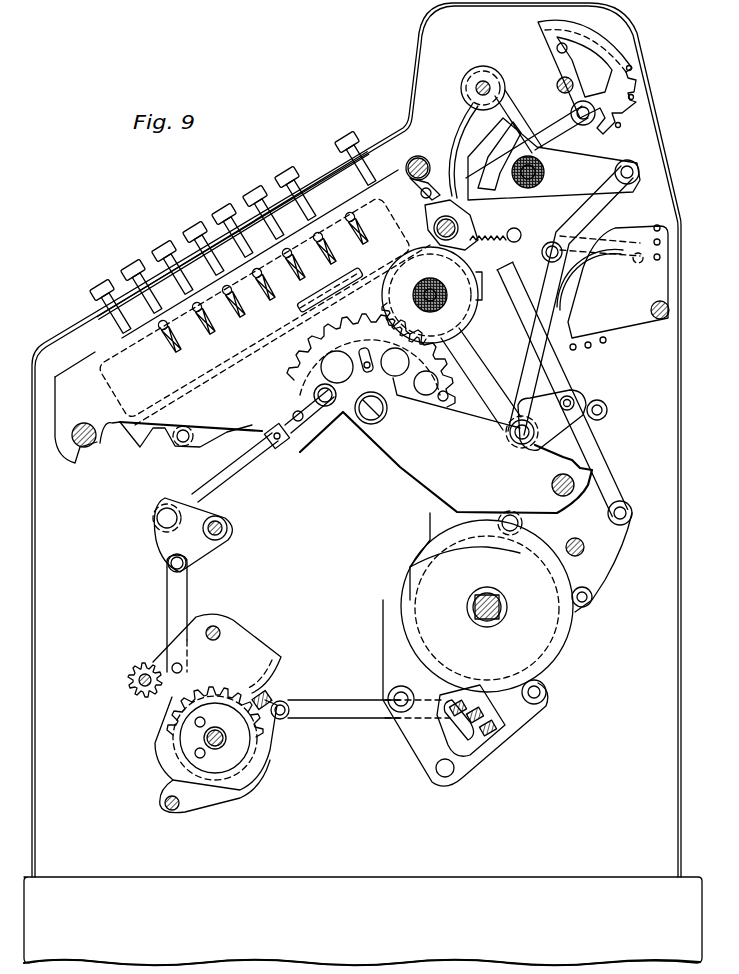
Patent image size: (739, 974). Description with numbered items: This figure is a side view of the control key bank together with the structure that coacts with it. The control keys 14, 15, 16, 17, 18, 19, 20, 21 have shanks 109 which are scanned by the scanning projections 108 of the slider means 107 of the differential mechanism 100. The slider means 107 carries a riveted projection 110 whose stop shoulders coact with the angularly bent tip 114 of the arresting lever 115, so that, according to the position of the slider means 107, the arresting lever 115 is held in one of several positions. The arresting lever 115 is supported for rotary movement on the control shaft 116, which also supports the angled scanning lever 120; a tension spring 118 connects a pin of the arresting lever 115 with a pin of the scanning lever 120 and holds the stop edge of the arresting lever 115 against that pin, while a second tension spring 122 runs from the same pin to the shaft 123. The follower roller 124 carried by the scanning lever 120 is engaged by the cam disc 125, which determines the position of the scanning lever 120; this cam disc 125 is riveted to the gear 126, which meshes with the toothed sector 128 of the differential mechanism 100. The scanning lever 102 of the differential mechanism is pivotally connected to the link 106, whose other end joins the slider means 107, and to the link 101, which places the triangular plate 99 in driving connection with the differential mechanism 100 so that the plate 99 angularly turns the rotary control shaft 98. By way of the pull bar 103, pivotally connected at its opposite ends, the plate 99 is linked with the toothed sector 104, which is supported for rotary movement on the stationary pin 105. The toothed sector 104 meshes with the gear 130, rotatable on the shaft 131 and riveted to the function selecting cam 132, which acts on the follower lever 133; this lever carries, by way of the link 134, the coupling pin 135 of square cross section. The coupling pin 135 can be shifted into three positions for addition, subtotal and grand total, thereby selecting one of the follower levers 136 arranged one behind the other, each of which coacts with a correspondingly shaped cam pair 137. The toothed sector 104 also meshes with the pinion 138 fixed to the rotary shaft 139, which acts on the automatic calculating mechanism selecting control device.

The control key 14 is at (347, 135).
The control key 15 is at (287, 170).
The control key 16 is at (255, 189).
The control key 17 is at (224, 207).
The control key 18 is at (195, 225).
The control key 19 is at (164, 244).
The control key 20 is at (133, 263).
The control key 21 is at (102, 283).
The arresting lever 115 is at (347, 193).
The follower roller 124 is at (412, 166).
The control shaft 116 is at (450, 175).
The tension spring 118 is at (472, 242).
The shaft 123 is at (518, 231).
The scanning lever 120 is at (463, 244).
The second tension spring 122 is at (541, 252).
The cam disc 125 is at (478, 296).
The gear 126 is at (466, 318).
The angularly bent tip 114 is at (338, 295).
The projection 110 is at (385, 333).
The shanks 109 is at (118, 320).
The scanning projections 108 is at (223, 402).
The slider means 107 is at (128, 433).
The link 106 is at (195, 444).
The toothed sector 128 is at (286, 443).
The scanning lever 102 is at (340, 440).
The differential mechanism 100 is at (392, 408).
The link 101 is at (190, 498).
The triangular plate 99 is at (220, 513).
The rotary control shaft 98 is at (220, 536).
The pull bar 103 is at (168, 607).
The stationary pin 105 is at (224, 626).
The toothed sector 104 is at (260, 653).
The pinion 138 is at (137, 665).
The rotary shaft 139 is at (136, 685).
The function selecting cam 132 is at (155, 752).
The gear 130 is at (182, 779).
The shaft 131 is at (228, 742).
The follower lever 133 is at (238, 790).
The link 134 is at (333, 719).
The follower levers 136 is at (392, 670).
The cam pair 137 is at (556, 628).
The coupling pin 135 is at (492, 735).